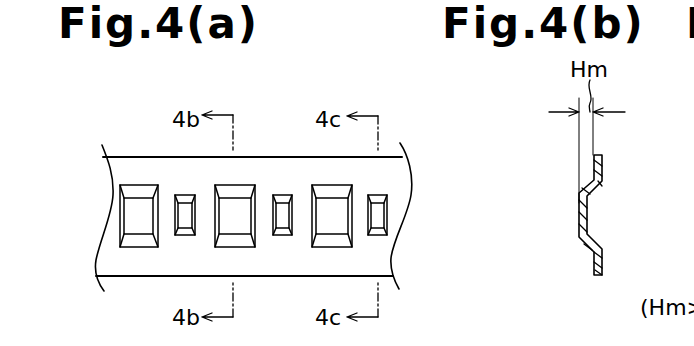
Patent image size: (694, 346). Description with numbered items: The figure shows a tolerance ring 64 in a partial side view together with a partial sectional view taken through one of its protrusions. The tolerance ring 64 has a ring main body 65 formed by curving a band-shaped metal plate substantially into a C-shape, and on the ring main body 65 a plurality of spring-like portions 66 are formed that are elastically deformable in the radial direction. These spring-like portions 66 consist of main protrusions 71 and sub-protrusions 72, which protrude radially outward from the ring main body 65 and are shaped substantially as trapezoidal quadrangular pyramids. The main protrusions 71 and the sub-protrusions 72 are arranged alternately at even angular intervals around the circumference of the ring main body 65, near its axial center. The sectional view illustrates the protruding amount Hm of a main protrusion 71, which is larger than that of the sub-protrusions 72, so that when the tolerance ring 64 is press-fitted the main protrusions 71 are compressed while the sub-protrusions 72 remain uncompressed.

In FIG. 4A, the tolerance ring 64 is at (441, 166).
In FIG. 4A, the ring main body 65 is at (134, 162).
In FIG. 4B, the ring main body 65 is at (601, 183).
In FIG. 4A, the spring-like portions 66 is at (253, 231).
In FIG. 4A, the main protrusions 71 is at (242, 205).
In FIG. 4B, the main protrusions 71 is at (579, 220).
In FIG. 4A, the sub-protrusions 72 is at (185, 233).